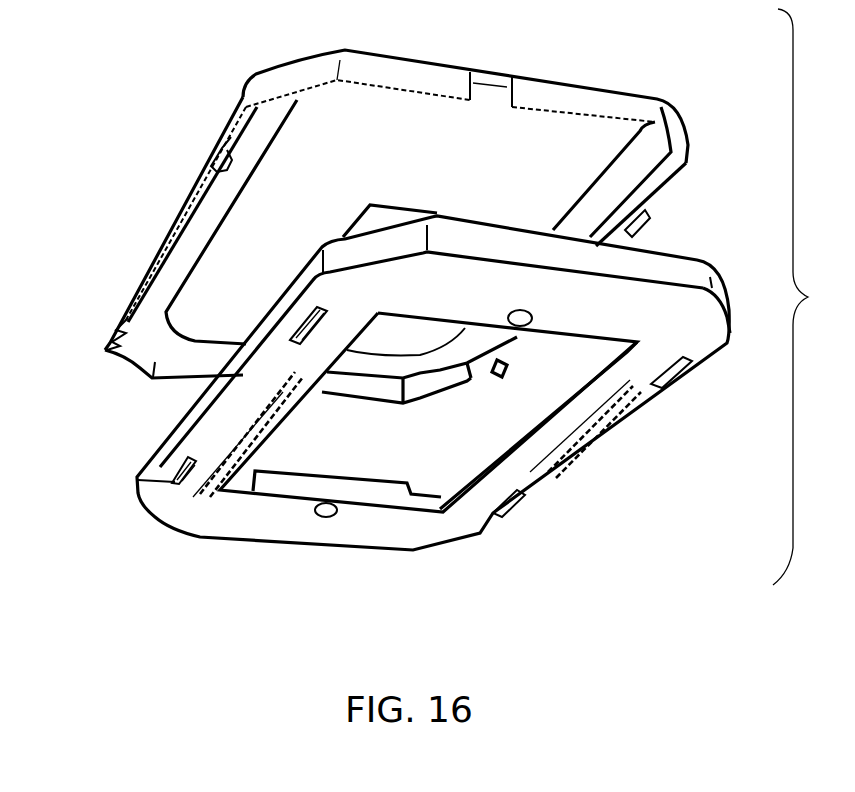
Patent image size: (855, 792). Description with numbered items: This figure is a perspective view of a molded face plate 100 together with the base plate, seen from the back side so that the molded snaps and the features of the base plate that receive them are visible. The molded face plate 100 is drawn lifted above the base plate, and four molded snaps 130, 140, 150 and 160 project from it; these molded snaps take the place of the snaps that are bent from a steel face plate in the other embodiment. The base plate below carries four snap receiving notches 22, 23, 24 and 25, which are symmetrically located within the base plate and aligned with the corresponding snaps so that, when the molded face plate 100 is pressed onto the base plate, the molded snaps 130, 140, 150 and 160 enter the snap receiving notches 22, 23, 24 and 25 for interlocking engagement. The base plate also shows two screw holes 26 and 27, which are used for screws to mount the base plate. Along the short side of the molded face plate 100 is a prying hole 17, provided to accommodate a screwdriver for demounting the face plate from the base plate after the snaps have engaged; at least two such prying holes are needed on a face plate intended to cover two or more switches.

The molded face plate 100 is at (440, 63).
The prying hole 17 is at (497, 90).
The molded snap 140 is at (217, 148).
The molded snap 130 is at (127, 320).
The molded snap 150 is at (648, 213).
The molded snap 160 is at (495, 378).
The snap receiving notch 22 is at (143, 481).
The snap receiving notch 23 is at (288, 333).
The snap receiving notch 24 is at (683, 372).
The snap receiving notch 25 is at (523, 505).
The screw hole 26 is at (526, 327).
The screw hole 27 is at (333, 503).